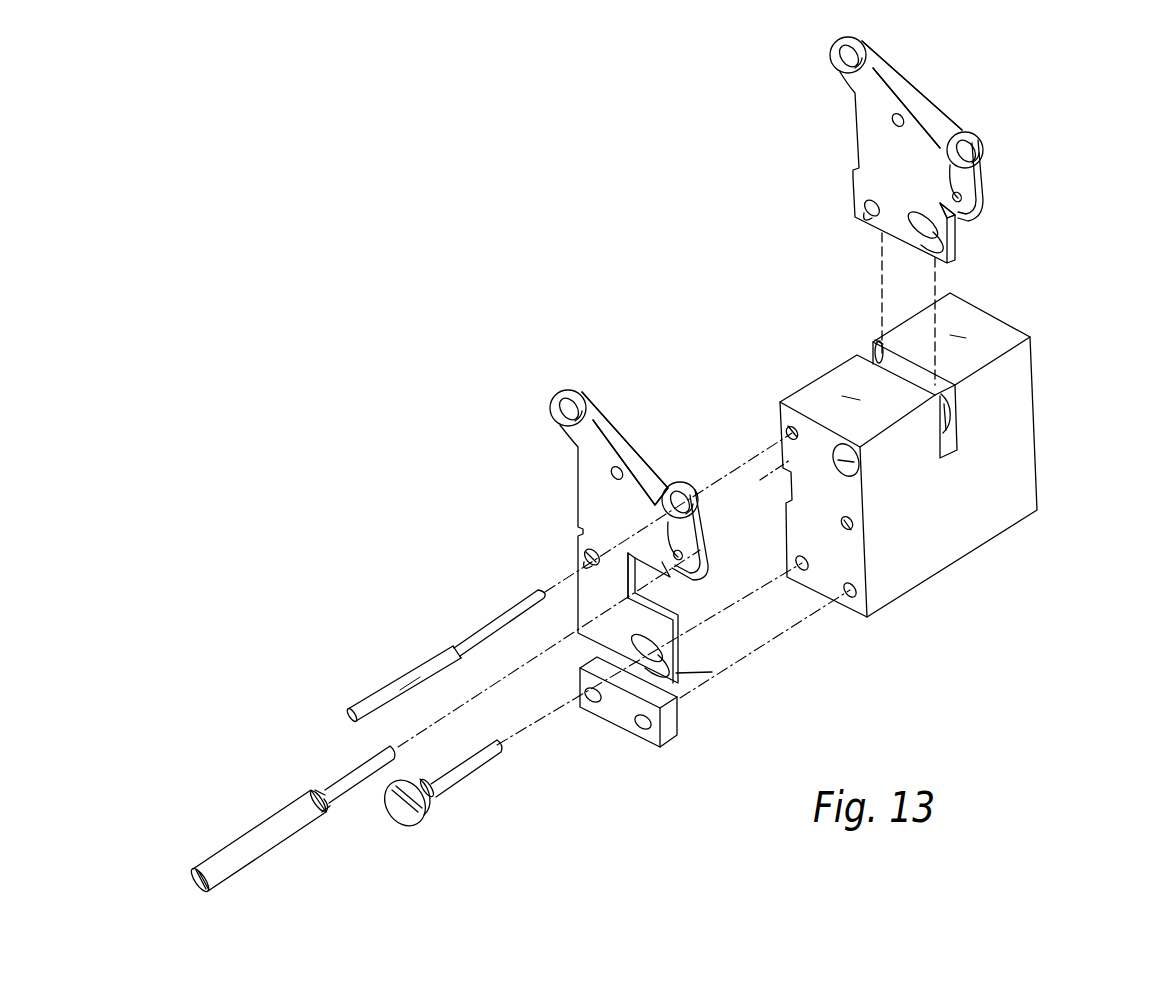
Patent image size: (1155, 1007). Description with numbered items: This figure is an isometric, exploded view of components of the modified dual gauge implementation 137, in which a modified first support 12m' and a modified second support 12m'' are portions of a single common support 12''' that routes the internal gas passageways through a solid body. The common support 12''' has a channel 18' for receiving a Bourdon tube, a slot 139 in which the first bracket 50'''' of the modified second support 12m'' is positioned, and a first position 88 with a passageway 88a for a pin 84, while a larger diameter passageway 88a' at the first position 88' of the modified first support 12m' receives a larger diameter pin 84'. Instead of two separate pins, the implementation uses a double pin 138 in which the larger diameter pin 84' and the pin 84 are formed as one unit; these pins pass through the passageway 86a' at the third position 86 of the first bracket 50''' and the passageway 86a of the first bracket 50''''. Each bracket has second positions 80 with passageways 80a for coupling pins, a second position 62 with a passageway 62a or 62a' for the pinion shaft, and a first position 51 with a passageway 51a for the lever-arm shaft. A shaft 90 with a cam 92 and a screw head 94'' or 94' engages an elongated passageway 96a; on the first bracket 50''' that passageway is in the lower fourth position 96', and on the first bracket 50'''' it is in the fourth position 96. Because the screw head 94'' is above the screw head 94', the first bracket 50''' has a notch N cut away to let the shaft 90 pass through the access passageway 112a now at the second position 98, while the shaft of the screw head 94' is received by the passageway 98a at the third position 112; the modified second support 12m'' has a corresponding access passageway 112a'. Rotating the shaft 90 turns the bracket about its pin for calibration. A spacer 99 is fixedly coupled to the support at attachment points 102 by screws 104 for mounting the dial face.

The common support 12''' is at (960, 425).
The modified first support 12m' is at (863, 399).
The modified second support 12m'' is at (972, 337).
The slot 139 is at (908, 350).
The first position 88 is at (852, 345).
The passageway 88a is at (846, 322).
The first position 88' is at (755, 424).
The larger diameter passageway 88a' is at (755, 405).
The second position 98 is at (947, 398).
The passageway 98a is at (848, 530).
The third position 112 is at (853, 528).
The access passageway 112a is at (890, 474).
The access passageway 112a' is at (987, 426).
The attachment points 102 is at (855, 594).
The first bracket 50'''' is at (874, 152).
The first bracket 50''' is at (592, 537).
The second positions 80 is at (840, 40).
The passageways 80a is at (838, 62).
The second position 62 is at (907, 117).
The passageway 62a is at (630, 439).
The passageway 62a' is at (909, 85).
The third position 86 is at (858, 222).
The passageway 86a is at (836, 204).
The passageway 86a' is at (546, 539).
The first position 51 is at (961, 198).
The passageway 51a is at (950, 210).
The fourth position 96 is at (958, 233).
The elongated passageway 96a is at (950, 260).
The lower fourth position 96' is at (710, 656).
The notch N is at (663, 597).
The channel 18' is at (759, 484).
The spacer 99 is at (620, 733).
The screws 104 is at (590, 698).
The pin 84 is at (445, 642).
The larger diameter pin 84' is at (401, 655).
The screw head 94'' is at (257, 822).
The screw head 94' is at (429, 819).
The cam 92 is at (313, 790).
The shaft 90 is at (348, 793).
The modified dual gauge implementation 137 is at (458, 307).
The double pin 138 is at (431, 601).